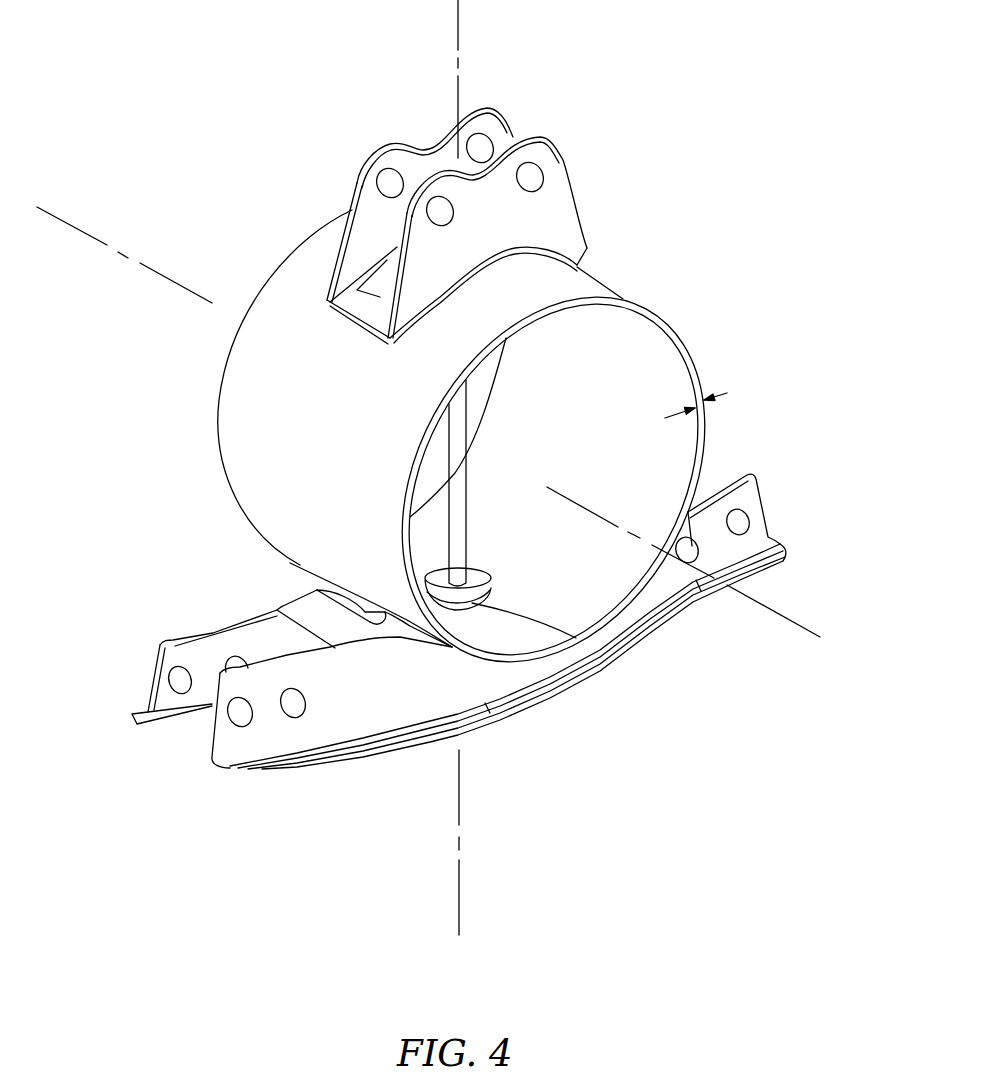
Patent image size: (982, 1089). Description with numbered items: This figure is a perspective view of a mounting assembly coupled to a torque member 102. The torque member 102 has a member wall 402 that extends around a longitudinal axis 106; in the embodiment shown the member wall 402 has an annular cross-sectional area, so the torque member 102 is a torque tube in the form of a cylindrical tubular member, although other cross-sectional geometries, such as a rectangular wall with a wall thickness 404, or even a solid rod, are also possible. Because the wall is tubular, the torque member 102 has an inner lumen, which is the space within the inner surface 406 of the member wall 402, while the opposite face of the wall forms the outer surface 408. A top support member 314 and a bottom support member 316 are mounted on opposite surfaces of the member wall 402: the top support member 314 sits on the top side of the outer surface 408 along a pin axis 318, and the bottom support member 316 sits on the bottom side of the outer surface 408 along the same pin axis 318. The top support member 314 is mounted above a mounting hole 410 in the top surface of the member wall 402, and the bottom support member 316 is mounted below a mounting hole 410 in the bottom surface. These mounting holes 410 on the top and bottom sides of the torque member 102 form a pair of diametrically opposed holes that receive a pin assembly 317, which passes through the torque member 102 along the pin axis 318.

The torque member 102 is at (466, 462).
The longitudinal axis 106 is at (88, 234).
The top support member 314 is at (591, 162).
The bottom support member 316 is at (391, 749).
The pin assembly 317 is at (478, 470).
The pin axis 318 is at (460, 887).
The member wall 402 is at (697, 378).
The wall thickness 404 is at (727, 393).
The inner surface 406 is at (638, 336).
The outer surface 408 is at (262, 493).
The mounting hole 410 is at (473, 603).